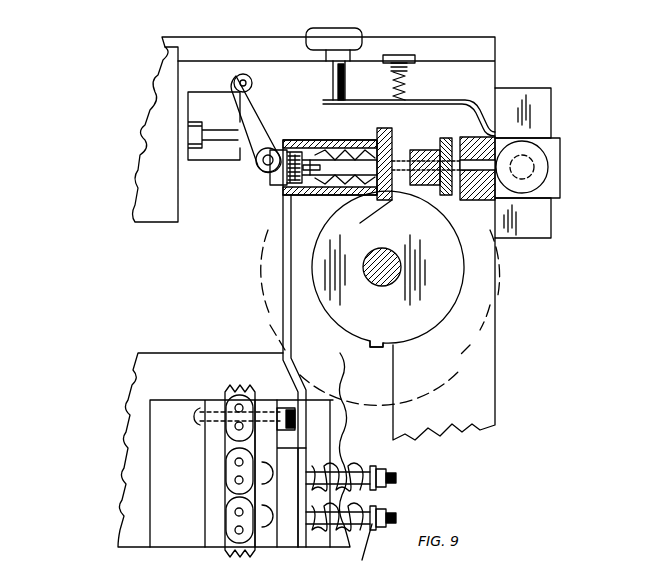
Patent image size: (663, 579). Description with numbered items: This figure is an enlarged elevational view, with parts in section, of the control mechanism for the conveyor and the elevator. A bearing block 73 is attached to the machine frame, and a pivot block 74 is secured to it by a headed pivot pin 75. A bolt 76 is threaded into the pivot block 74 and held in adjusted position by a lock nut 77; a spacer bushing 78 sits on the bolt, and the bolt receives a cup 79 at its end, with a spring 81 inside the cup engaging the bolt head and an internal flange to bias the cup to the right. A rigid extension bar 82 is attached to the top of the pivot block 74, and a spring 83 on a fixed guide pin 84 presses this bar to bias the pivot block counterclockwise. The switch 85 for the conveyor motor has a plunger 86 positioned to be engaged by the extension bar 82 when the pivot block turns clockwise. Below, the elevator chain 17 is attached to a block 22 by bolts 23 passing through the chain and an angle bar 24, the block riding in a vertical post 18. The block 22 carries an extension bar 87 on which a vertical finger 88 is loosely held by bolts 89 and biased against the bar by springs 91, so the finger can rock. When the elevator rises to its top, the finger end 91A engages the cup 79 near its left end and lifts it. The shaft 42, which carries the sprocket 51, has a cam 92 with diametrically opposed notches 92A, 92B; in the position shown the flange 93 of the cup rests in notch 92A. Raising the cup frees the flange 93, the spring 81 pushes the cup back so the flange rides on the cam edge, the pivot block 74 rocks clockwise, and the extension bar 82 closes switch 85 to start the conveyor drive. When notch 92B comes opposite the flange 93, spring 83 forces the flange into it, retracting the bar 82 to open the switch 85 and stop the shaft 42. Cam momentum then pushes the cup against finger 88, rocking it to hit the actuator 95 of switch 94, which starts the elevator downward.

The chain 17 is at (232, 475).
The vertical post 18 is at (487, 363).
The block 22 is at (203, 352).
The bolt 23 is at (200, 421).
The angle bar 24 is at (265, 445).
The shaft 42 is at (388, 258).
The sprocket 51 is at (268, 267).
The bearing block 73 is at (540, 105).
The pivot block 74 is at (560, 160).
The headed pivot pin 75 is at (546, 180).
The bolt 76 is at (470, 200).
The lock nut 77 is at (452, 138).
The spacer bushing 78 is at (418, 148).
The cup 79 is at (347, 140).
The spring 81 is at (330, 192).
The extension bar 82 is at (424, 98).
The spring 83 is at (412, 66).
The guide pin 84 is at (397, 64).
The switch 85 is at (333, 36).
The plunger 86 is at (333, 70).
The extension bar 87 is at (287, 547).
The vertical finger 88 is at (296, 372).
The bolt 89 is at (396, 477).
The spring 91 is at (358, 549).
The finger end 91A is at (283, 194).
The cam 92 is at (449, 304).
The notch 92A is at (360, 218).
The notch 92B is at (385, 338).
The flange 93 is at (384, 130).
The switch 94 is at (152, 116).
The actuator 95 is at (258, 166).